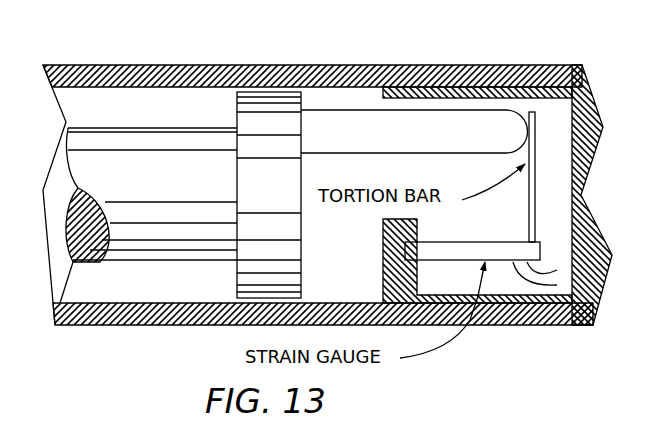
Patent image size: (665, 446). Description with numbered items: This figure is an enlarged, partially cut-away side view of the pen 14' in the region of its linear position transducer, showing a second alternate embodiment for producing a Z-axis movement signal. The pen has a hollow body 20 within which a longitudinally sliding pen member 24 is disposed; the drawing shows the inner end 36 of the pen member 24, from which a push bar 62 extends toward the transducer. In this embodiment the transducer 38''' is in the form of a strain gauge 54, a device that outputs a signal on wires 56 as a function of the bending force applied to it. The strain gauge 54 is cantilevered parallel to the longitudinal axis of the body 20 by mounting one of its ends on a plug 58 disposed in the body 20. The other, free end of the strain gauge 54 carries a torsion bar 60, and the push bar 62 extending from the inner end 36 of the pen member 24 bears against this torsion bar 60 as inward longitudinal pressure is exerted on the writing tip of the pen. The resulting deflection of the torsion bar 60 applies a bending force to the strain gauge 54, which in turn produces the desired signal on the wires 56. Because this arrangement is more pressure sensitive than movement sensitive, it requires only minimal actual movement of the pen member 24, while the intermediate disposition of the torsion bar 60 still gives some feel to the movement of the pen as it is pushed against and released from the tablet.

The hollow body 20 is at (85, 325).
The pen member 24 is at (132, 260).
The inner end 36 is at (220, 272).
The plug 58 is at (598, 110).
The push bar 62 is at (513, 132).
The torsion bar 60 is at (538, 210).
The strain gauge 54 is at (540, 248).
The wires 56 is at (557, 278).
The pen 14' is at (515, 373).
The transducer 38''' is at (557, 336).